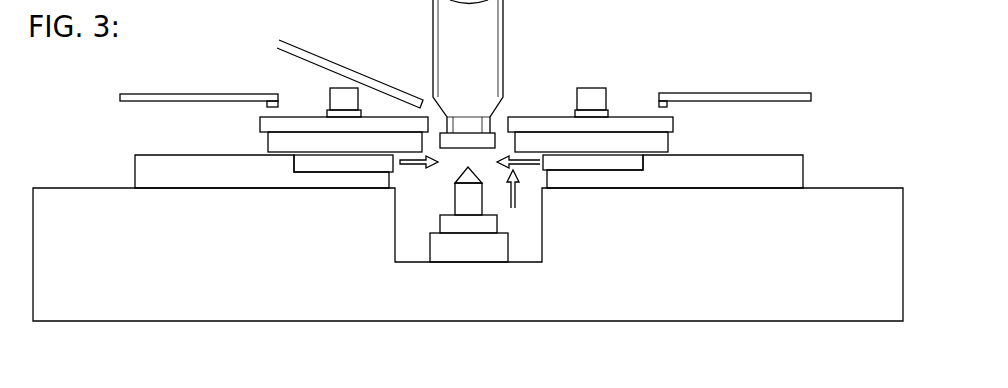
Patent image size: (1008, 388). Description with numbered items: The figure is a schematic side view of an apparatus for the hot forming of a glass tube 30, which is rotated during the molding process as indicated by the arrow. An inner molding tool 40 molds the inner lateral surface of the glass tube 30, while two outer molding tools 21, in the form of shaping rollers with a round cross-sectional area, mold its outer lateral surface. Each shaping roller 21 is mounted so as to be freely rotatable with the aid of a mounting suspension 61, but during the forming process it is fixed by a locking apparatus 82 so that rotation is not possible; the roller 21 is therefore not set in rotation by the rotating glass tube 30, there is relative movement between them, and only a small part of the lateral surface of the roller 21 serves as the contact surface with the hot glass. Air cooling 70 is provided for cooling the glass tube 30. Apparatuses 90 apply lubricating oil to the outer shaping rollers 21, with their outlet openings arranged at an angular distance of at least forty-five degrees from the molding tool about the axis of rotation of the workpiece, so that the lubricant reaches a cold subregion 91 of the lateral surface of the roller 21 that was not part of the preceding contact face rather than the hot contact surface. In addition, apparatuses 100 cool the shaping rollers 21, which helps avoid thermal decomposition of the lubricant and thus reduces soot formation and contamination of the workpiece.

The outer molding tool 21 is at (288, 142).
The glass tube 30 is at (478, 57).
The inner molding tool 40 is at (467, 200).
The mounting suspension 61 is at (323, 177).
The air cooling 70 is at (337, 65).
The locking apparatus 82 is at (330, 90).
The apparatus for applying lubricant 90 is at (220, 95).
The subregion of the lateral surface 91 is at (270, 108).
The apparatus for cooling the shaping rollers 100 is at (347, 160).